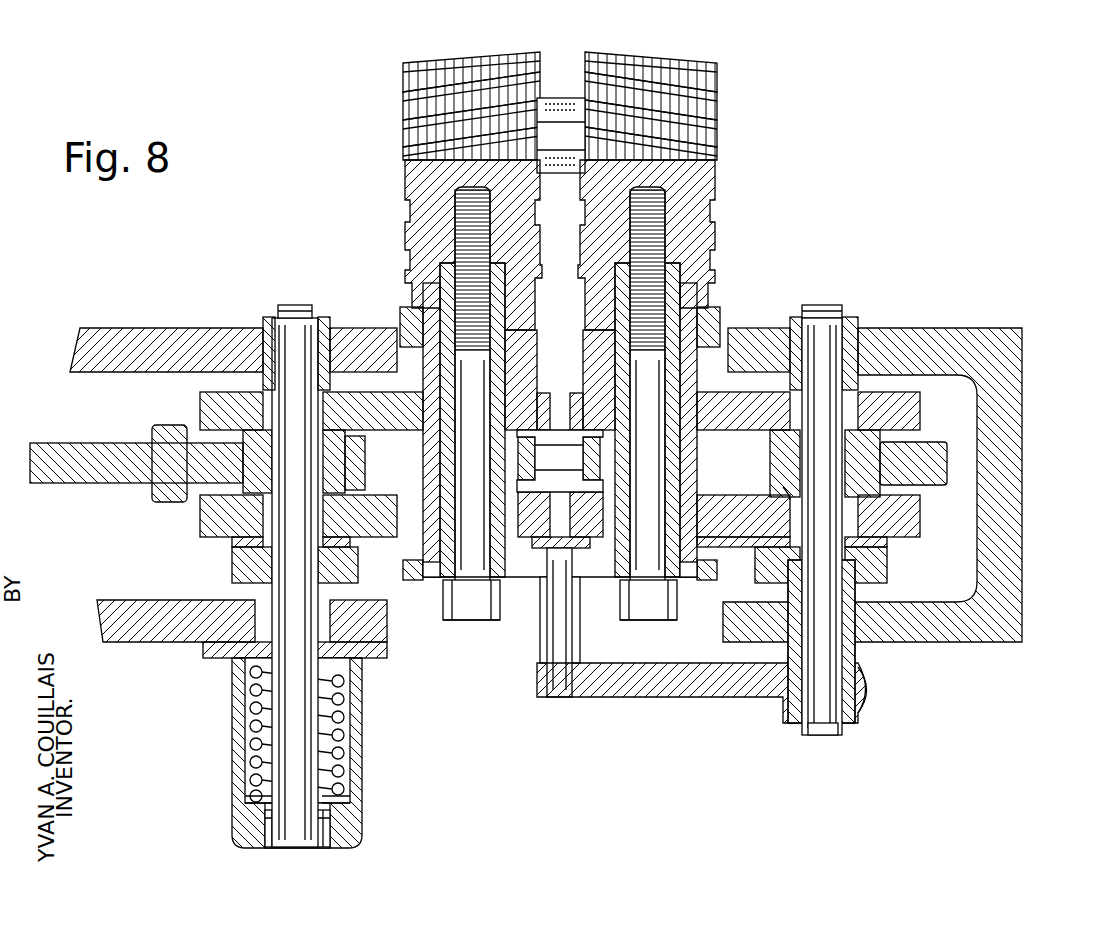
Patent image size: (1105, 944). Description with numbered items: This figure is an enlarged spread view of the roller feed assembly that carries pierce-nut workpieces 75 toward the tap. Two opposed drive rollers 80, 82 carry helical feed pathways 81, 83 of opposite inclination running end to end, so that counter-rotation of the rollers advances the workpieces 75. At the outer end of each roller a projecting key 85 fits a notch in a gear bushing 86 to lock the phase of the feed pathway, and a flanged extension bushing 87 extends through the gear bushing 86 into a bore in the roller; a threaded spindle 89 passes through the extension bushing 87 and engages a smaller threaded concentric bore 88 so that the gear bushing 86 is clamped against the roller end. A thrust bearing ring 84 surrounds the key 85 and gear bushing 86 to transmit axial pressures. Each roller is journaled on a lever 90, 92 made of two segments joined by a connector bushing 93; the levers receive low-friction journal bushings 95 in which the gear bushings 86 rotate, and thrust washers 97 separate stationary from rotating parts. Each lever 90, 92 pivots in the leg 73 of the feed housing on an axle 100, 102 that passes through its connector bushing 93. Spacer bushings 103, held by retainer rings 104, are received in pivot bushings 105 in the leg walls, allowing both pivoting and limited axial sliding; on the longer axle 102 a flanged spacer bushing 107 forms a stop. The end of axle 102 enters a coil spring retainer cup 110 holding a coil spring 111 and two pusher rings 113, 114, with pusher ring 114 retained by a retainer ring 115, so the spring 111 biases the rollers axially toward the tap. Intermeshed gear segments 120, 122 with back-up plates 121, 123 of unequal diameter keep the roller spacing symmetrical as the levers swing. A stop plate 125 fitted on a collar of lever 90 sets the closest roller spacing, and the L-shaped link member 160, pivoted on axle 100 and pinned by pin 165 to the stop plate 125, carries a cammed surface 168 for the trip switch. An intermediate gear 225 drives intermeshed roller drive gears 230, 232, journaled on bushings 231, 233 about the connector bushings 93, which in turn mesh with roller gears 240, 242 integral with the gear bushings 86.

The leg of feed housing 73 is at (985, 630).
The workpieces 75 is at (561, 135).
The drive roller 80 is at (717, 98).
The helical feed pathway 81 is at (717, 135).
The drive roller 82 is at (405, 101).
The helical feed pathway 83 is at (405, 74).
The thrust bearing ring 84 is at (428, 350).
The projecting key 85 is at (438, 270).
The gear bushing 86 is at (325, 318).
The flanged extension bushing 87 is at (450, 620).
The threaded concentric bore 88 is at (715, 195).
The threaded spindle 89 is at (488, 622).
The lever 90 is at (920, 395).
The lever 92 is at (230, 395).
The connector bushing 93 is at (205, 396).
The journal bushing 95 is at (400, 320).
The thrust washer 97 is at (400, 335).
The axle 100 is at (820, 305).
The axle 102 is at (310, 812).
The spacer bushing 103 is at (263, 322).
The retainer ring 104 is at (278, 306).
The pivot bushing 105 is at (263, 333).
The flanged spacer bushing 107 is at (385, 652).
The coil spring retainer cup 110 is at (362, 815).
The coil spring 111 is at (250, 762).
The pusher ring 113 is at (338, 680).
The pusher ring 114 is at (340, 800).
The retainer ring 115 is at (270, 808).
The gear segment 120 is at (887, 568).
The back-up plate 121 is at (887, 540).
The gear segment 122 is at (232, 576).
The back-up plate 123 is at (235, 540).
The stop plate 125 is at (580, 590).
The link member 160 is at (688, 697).
The pin 165 is at (565, 690).
The cammed surface 168 is at (873, 690).
The intermediate gear 225 is at (70, 465).
The roller drive gear 230 is at (945, 470).
The bushing 231 is at (255, 455).
The roller drive gear 232 is at (197, 490).
The bushing 233 is at (783, 487).
The roller gear 240 is at (598, 488).
The roller gear 242 is at (538, 452).